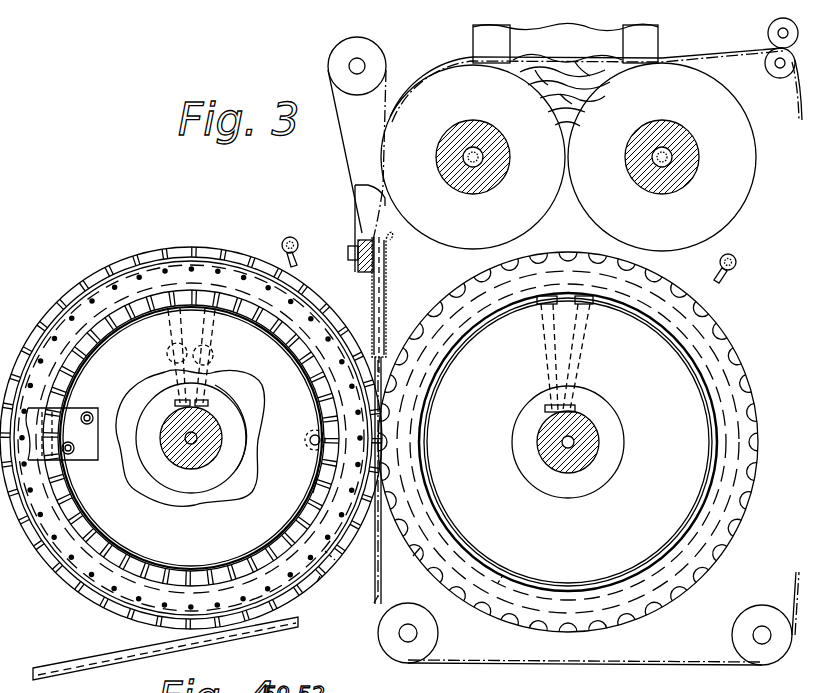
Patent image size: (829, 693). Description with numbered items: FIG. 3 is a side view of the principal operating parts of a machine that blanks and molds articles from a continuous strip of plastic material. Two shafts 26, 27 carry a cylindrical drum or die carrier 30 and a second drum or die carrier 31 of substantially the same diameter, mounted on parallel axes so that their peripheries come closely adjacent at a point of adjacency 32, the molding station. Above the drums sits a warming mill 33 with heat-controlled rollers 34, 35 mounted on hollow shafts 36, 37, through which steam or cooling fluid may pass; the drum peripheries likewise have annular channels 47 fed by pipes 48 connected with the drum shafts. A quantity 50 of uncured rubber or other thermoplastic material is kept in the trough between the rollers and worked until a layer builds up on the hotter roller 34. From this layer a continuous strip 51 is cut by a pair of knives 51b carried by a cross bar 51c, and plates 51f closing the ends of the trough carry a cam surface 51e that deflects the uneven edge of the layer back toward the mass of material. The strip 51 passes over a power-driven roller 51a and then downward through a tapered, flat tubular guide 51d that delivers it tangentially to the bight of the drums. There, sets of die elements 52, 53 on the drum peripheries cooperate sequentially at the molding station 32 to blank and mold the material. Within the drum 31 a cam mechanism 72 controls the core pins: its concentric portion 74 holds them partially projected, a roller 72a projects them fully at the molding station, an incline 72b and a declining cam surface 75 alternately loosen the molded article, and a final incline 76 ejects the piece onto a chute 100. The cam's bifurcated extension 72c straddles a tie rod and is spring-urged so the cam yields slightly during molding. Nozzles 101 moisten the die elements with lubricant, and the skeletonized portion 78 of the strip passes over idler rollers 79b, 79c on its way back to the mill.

The shaft 26 is at (587, 467).
The shaft 27 is at (173, 460).
The drum or die carrier 30 is at (718, 541).
The drum or die carrier 31 is at (82, 568).
The point of adjacency 32 is at (393, 435).
The warming mill 33 is at (461, 48).
The heat-controlled roller 34 is at (443, 78).
The heat-controlled roller 35 is at (735, 172).
The shaft 36 is at (452, 145).
The shaft 37 is at (670, 142).
The annular channels 47 is at (326, 552).
The pipes 48 is at (166, 343).
The quantity of moldable material 50 is at (561, 56).
The continuous strip 51 is at (378, 110).
The roller 51a is at (340, 57).
The knives 51b is at (372, 190).
The cross bar 51c is at (362, 243).
The tubular guide 51d is at (386, 293).
The cam surface 51e is at (488, 42).
The plates 51f is at (643, 40).
The die elements 52 is at (413, 556).
The die elements 53 is at (317, 582).
The cam mechanism 72 is at (177, 556).
The roller 72a is at (311, 431).
The incline 72b is at (313, 493).
The bifurcated extension 72c is at (72, 413).
The concentric portion 74 is at (243, 318).
The declining cam surface 75 is at (270, 543).
The incline 76 is at (201, 577).
The skeletonized portion 78 is at (374, 603).
The idler roller 79b is at (392, 653).
The idler roller 79c is at (741, 640).
The chute 100 is at (67, 663).
The nozzles 101 is at (298, 256).